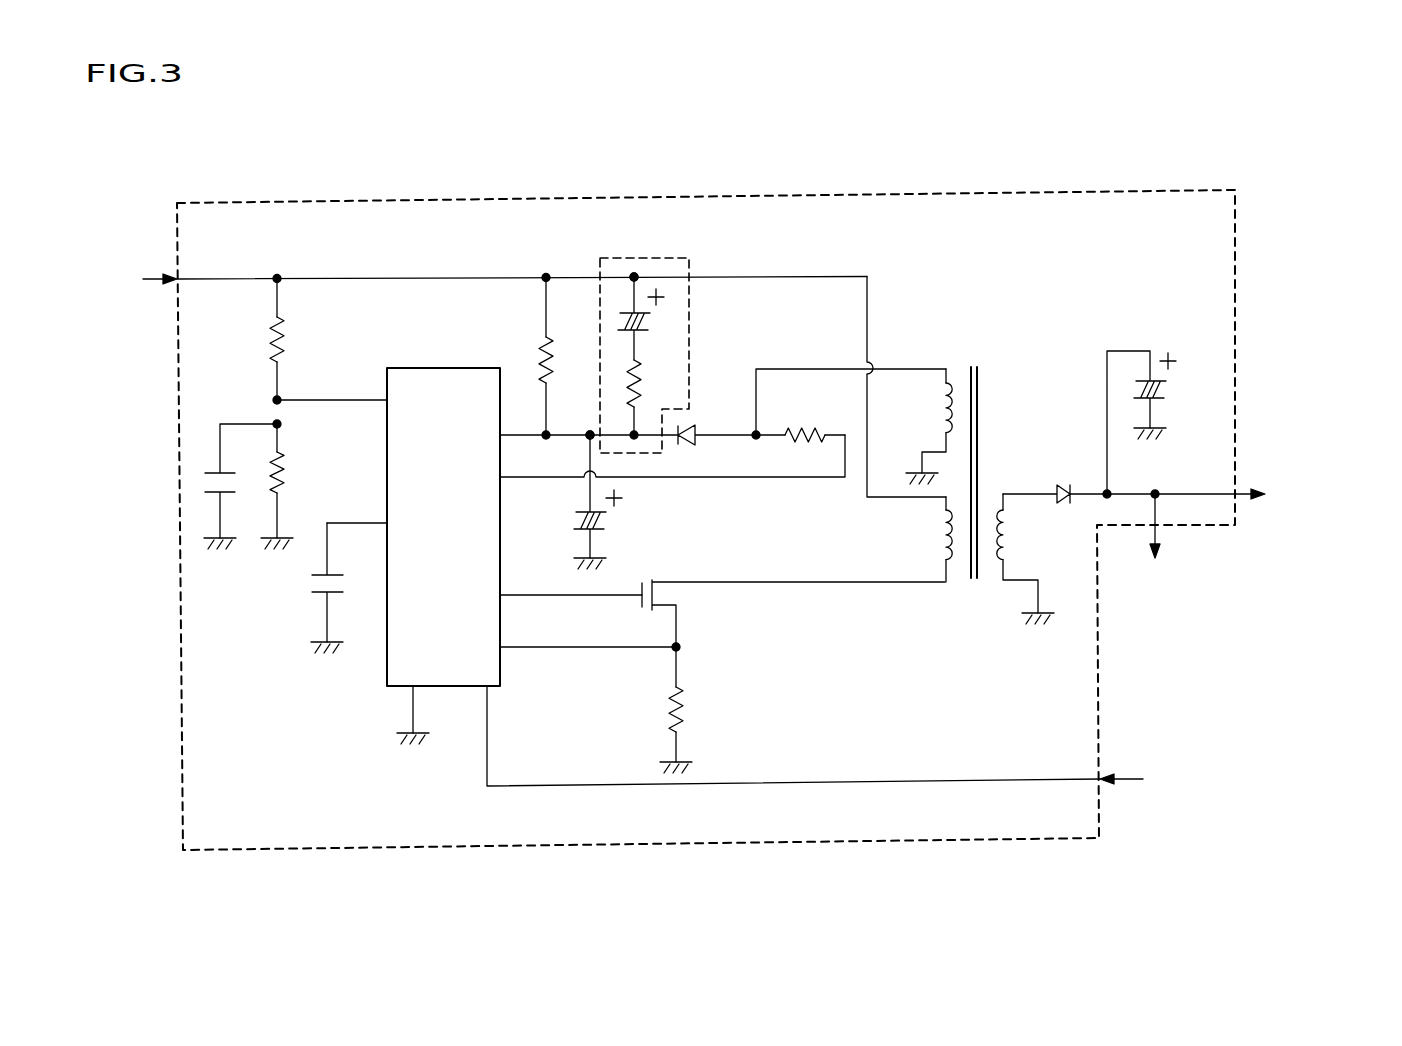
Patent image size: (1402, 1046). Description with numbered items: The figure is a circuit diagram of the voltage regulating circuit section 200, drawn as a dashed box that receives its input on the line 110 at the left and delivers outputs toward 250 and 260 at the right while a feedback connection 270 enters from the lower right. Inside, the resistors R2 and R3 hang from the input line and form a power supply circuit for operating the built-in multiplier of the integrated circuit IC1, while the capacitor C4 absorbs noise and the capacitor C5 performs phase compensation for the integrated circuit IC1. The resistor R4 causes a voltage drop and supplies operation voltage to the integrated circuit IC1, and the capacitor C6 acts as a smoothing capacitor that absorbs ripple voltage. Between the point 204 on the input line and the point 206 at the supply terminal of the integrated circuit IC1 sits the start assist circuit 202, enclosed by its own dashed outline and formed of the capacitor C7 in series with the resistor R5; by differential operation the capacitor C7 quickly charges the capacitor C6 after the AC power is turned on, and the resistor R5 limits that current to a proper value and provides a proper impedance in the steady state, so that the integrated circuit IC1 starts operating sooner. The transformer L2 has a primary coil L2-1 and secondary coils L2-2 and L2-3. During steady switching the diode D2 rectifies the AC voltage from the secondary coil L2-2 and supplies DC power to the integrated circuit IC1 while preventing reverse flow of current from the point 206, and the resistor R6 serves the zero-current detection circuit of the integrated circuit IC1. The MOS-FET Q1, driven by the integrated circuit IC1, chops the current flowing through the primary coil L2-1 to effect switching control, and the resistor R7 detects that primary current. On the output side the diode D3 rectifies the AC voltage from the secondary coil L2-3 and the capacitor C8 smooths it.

The input voltage line 110 is at (481, 280).
The voltage regulating circuit section 200 is at (1068, 190).
The start assist circuit 202 is at (682, 258).
The point 204 is at (634, 270).
The point 206 is at (590, 438).
The feedback signal line 270 is at (840, 738).
The output to 250 is at (1231, 493).
The output to 260 is at (1156, 546).
The resistor R2 is at (283, 339).
The resistor R3 is at (284, 458).
The resistor R4 is at (540, 350).
The resistor R5 is at (644, 390).
The resistor R6 is at (807, 429).
The resistor R7 is at (683, 692).
The capacitor C4 is at (206, 473).
The capacitor C5 is at (320, 590).
The capacitor C6 is at (602, 527).
The capacitor C7 is at (650, 327).
The capacitor C8 is at (1158, 400).
The integrated circuit IC1 is at (419, 368).
The MOS-FET Q1 is at (662, 600).
The diode D2 is at (692, 441).
The diode D3 is at (1062, 485).
The transformer L2 is at (966, 451).
The primary coil L2-1 is at (916, 539).
The secondary coil L2-2 is at (916, 426).
The secondary coil L2-3 is at (1031, 559).